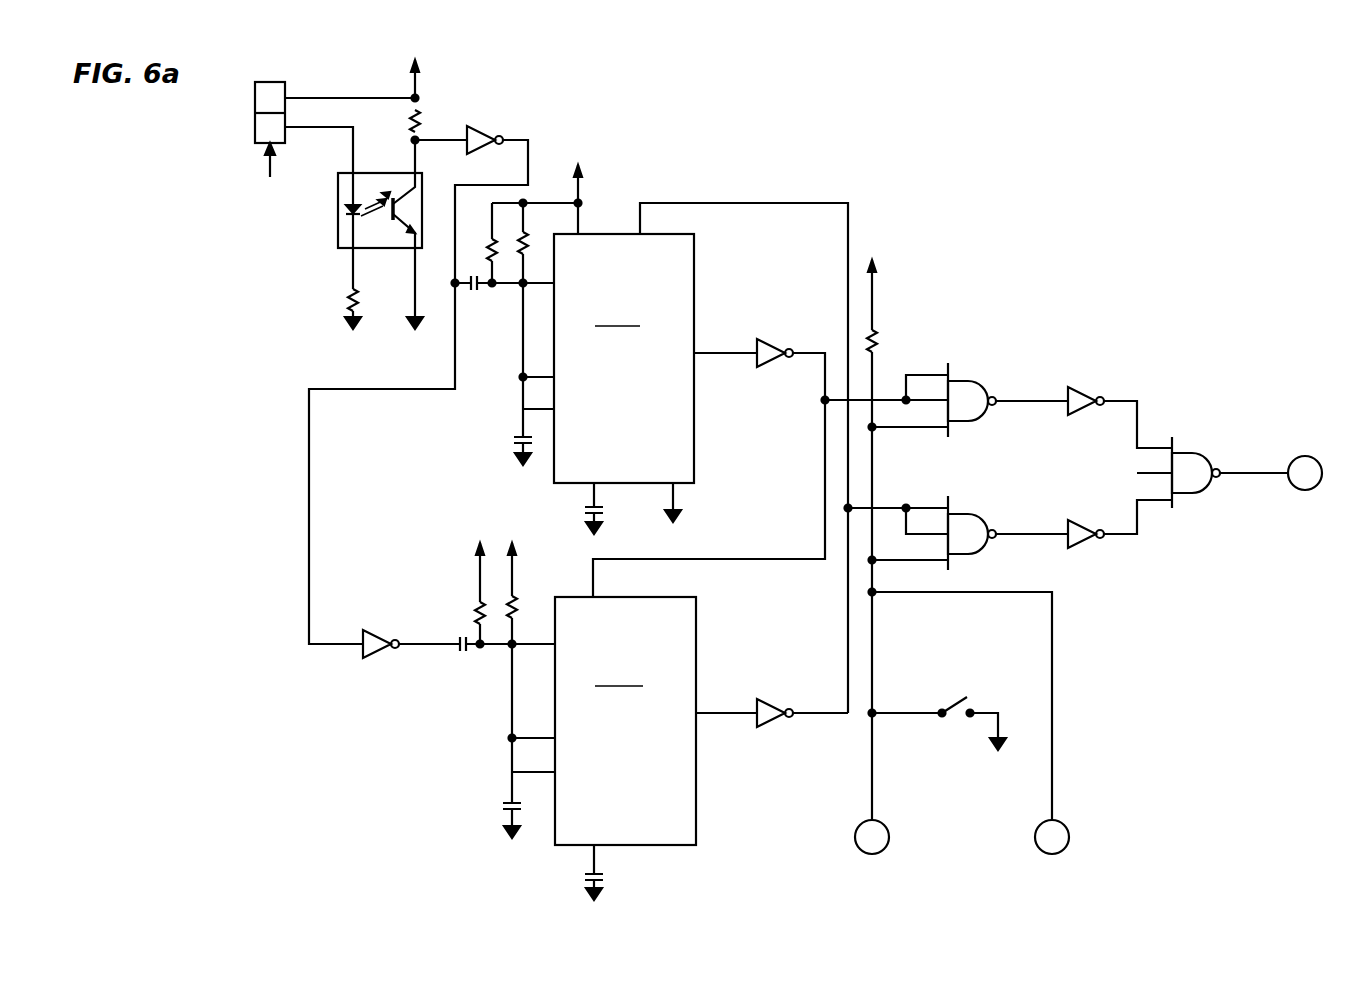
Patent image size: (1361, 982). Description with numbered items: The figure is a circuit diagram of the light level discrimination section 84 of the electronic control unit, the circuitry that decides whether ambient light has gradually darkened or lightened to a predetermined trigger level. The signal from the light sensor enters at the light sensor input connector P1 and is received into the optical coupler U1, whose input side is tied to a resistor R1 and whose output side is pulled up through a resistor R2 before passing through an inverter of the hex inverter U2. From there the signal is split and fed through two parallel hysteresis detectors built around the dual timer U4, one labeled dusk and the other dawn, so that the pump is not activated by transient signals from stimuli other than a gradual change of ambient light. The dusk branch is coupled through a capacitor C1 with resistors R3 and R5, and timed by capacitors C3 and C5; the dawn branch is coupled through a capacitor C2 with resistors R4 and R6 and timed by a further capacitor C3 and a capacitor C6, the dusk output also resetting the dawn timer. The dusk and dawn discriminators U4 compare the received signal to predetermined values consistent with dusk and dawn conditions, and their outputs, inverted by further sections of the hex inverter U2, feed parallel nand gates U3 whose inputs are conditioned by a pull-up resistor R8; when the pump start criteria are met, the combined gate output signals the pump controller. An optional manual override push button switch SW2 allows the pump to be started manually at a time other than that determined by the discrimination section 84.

The light level discrimination section 84 is at (905, 201).
The light sensor input connector P1 is at (270, 158).
The optical coupler U1 is at (383, 215).
The hex inverter U2 is at (733, 440).
The NAND gate U3 is at (1093, 469).
The dusk and dawn discriminators U4 is at (641, 539).
The resistor R1 is at (338, 300).
The resistor R2 is at (400, 123).
The resistor R3 is at (479, 250).
The resistor R4 is at (466, 613).
The resistor R5 is at (536, 235).
The resistor R6 is at (524, 597).
The resistor R8 is at (887, 341).
The capacitor C1 is at (477, 300).
The capacitor C2 is at (465, 661).
The capacitor C3 is at (507, 621).
The capacitor C5 is at (580, 512).
The capacitor C6 is at (580, 879).
The manual override push button switch SW2 is at (959, 686).